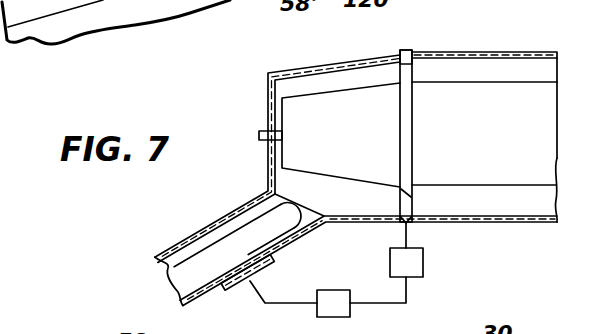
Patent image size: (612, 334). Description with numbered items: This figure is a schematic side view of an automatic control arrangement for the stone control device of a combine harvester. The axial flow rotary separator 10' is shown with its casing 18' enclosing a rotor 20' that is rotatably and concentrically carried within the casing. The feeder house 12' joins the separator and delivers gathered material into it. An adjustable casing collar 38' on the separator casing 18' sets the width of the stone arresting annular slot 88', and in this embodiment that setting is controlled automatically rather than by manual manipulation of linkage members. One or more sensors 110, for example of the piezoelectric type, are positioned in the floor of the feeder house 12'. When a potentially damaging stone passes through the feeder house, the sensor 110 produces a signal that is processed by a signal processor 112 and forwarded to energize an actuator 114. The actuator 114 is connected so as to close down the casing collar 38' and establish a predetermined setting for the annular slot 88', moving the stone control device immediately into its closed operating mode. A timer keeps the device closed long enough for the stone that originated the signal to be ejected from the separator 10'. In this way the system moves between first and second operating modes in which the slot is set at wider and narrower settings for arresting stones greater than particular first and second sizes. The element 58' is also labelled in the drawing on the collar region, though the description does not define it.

The separator 10' is at (277, 150).
The feeder house 12' is at (356, 246).
The casing 18' is at (484, 113).
The rotor 20' is at (305, 135).
The adjustable collar 38' is at (423, 38).
The valve member 58' is at (436, 136).
The stone arresting annular slot 88' is at (484, 94).
The sensor 110 is at (274, 262).
The signal processor 112 is at (300, 290).
The actuator 114 is at (423, 262).